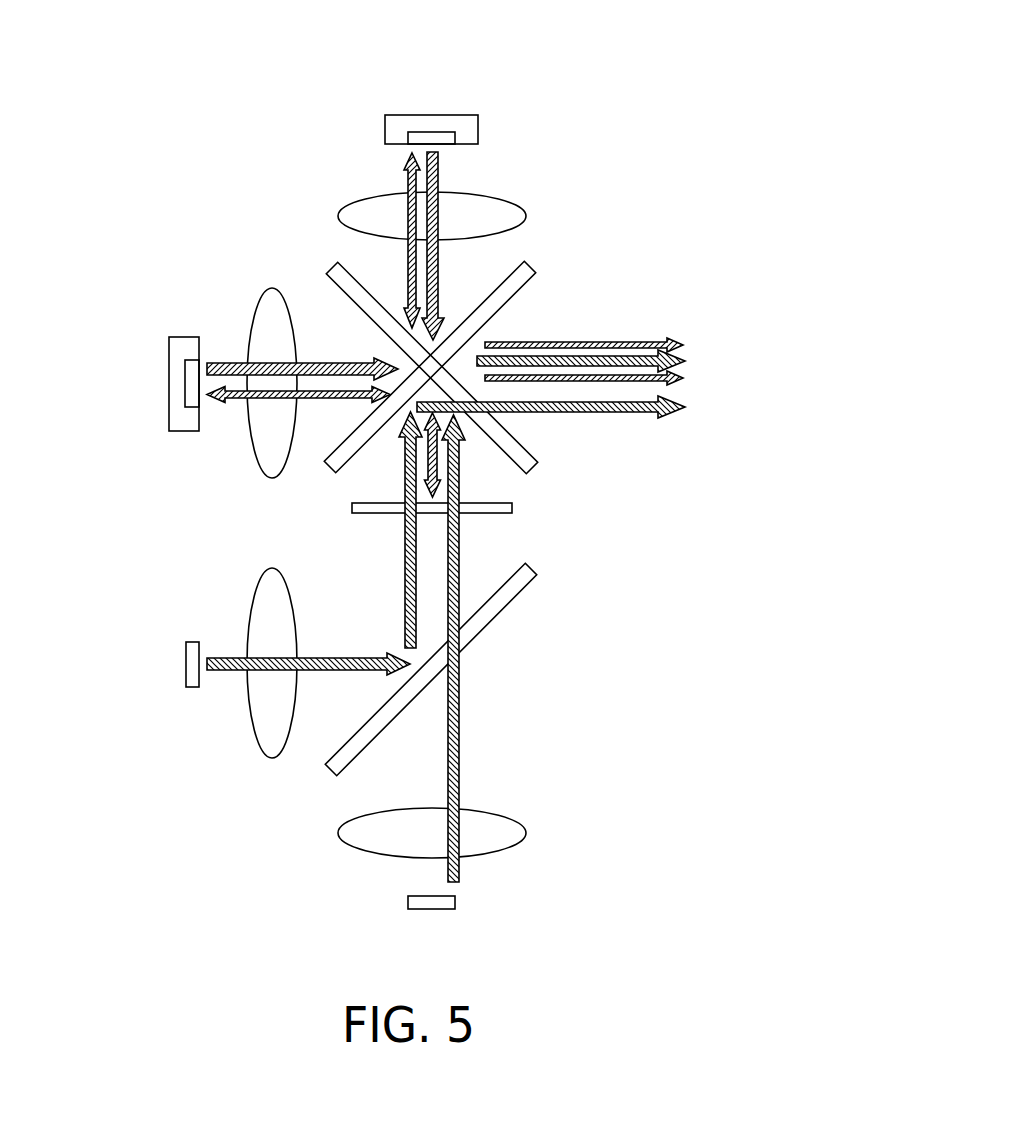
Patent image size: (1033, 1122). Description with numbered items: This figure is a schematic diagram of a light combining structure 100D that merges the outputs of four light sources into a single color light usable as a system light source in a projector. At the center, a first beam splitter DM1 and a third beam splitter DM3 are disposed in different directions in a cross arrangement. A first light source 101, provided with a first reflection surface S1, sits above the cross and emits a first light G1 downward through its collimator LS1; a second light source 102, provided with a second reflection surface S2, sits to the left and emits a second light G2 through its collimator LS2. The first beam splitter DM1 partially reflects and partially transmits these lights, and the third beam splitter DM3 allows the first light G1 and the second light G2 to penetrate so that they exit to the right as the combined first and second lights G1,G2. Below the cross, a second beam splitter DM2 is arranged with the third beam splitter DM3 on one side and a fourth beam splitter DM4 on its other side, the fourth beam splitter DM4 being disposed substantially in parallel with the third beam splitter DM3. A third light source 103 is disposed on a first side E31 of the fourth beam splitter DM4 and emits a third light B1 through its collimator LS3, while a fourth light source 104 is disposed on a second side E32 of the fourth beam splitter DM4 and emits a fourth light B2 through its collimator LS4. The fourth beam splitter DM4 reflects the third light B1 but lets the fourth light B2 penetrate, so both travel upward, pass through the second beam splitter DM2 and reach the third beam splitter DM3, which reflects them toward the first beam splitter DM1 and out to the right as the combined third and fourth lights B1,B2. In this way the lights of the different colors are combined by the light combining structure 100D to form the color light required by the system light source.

The light combining structure 100D is at (770, 35).
The first light source 101 is at (420, 131).
The second light source 102 is at (185, 393).
The third light source 103 is at (186, 670).
The fourth light source 104 is at (433, 909).
The first reflection surface S1 is at (453, 115).
The second reflection surface S2 is at (169, 360).
The collimator LS1 is at (500, 193).
The collimator LS2 is at (272, 288).
The collimator LS3 is at (272, 568).
The collimator LS4 is at (500, 815).
The first beam splitter DM1 is at (538, 463).
The second beam splitter DM2 is at (485, 513).
The third beam splitter DM3 is at (515, 295).
The fourth beam splitter DM4 is at (517, 596).
The first light G1 is at (438, 272).
The second light G2 is at (325, 363).
The third light B1 is at (340, 658).
The fourth light B2 is at (459, 722).
The first and second lights G1,G2 is at (627, 361).
The third and fourth lights B1,B2 is at (595, 402).
The first side E31 is at (210, 728).
The second side E32 is at (538, 913).